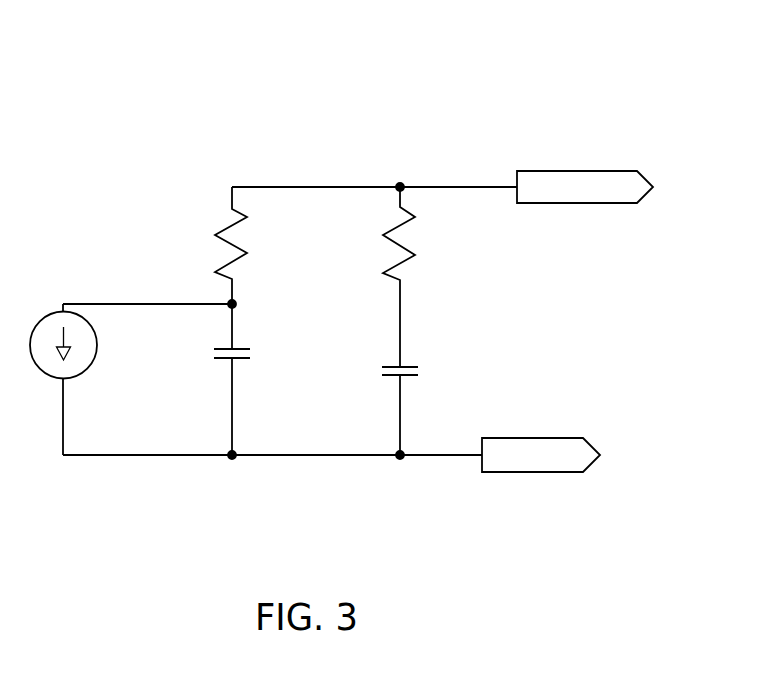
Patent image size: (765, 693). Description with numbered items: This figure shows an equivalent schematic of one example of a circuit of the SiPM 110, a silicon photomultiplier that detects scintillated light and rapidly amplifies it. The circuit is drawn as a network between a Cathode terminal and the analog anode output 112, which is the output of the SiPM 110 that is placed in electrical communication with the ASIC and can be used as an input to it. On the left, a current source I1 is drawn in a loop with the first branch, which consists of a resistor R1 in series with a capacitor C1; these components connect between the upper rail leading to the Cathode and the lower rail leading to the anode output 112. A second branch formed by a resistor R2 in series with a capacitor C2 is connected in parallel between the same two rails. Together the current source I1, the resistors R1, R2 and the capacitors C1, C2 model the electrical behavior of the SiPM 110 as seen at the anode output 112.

The SiPM 110 is at (498, 123).
The analog anode output 112 is at (534, 437).
The current source I1 is at (68, 366).
The first resistor R1 is at (248, 245).
The first capacitor C1 is at (241, 379).
The second resistor R2 is at (414, 277).
The second capacitor C2 is at (408, 398).